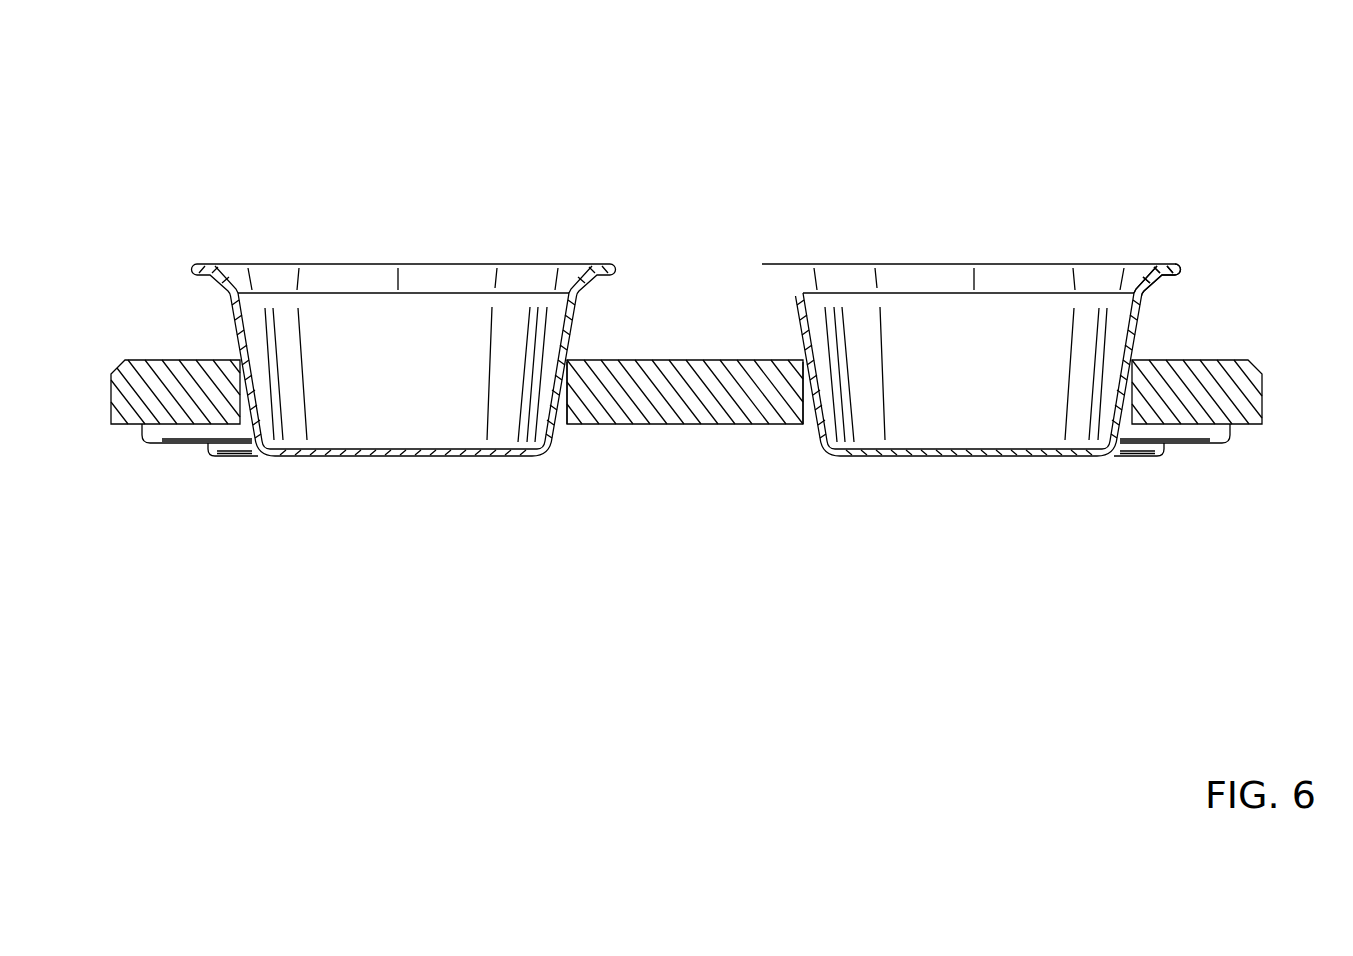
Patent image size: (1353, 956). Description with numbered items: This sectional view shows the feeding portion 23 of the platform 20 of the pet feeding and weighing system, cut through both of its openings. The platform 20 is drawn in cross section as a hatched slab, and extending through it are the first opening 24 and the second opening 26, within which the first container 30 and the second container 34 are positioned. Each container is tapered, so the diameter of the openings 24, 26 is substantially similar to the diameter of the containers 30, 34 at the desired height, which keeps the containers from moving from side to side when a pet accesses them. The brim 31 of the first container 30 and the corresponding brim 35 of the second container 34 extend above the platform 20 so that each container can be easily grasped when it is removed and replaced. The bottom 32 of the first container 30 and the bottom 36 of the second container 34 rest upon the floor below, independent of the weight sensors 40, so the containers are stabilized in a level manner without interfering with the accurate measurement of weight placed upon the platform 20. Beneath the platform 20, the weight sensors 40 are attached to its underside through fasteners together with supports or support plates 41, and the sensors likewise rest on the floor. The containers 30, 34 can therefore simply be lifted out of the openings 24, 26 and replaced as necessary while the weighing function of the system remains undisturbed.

The platform 20 is at (147, 349).
The feeding portion 23 is at (685, 359).
The first opening 24 is at (803, 424).
The second opening 26 is at (562, 426).
The first container 30 is at (923, 250).
The brim 31 is at (1183, 263).
The bottom 32 is at (930, 456).
The second container 34 is at (371, 248).
The cup flange 35 is at (193, 268).
The bottom 36 is at (448, 458).
The weight sensors 40 is at (258, 470).
The support plates 41 is at (182, 444).